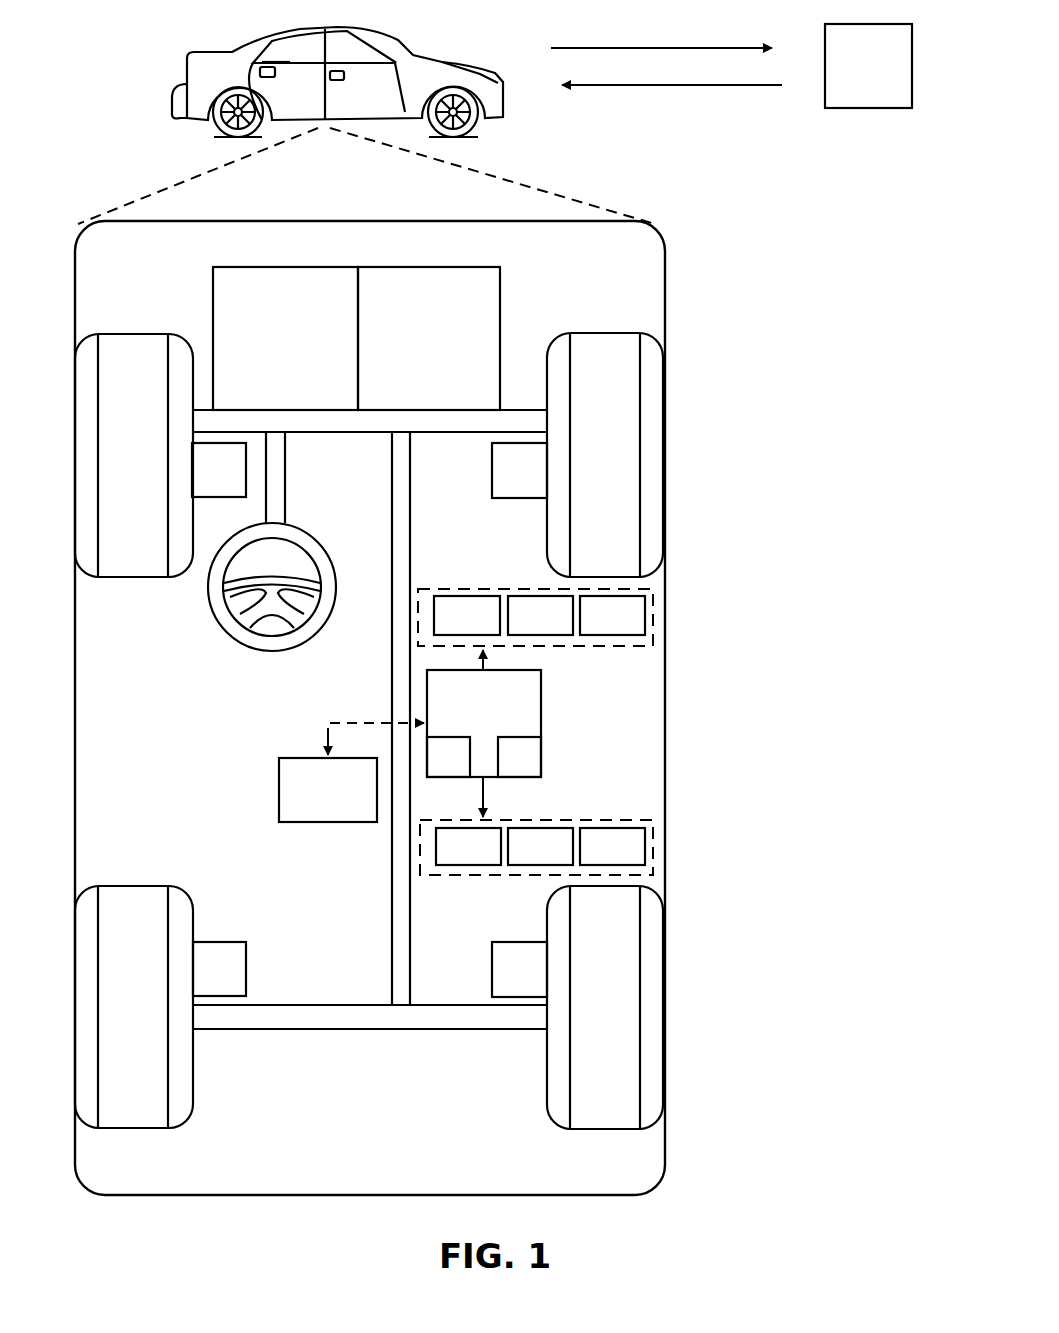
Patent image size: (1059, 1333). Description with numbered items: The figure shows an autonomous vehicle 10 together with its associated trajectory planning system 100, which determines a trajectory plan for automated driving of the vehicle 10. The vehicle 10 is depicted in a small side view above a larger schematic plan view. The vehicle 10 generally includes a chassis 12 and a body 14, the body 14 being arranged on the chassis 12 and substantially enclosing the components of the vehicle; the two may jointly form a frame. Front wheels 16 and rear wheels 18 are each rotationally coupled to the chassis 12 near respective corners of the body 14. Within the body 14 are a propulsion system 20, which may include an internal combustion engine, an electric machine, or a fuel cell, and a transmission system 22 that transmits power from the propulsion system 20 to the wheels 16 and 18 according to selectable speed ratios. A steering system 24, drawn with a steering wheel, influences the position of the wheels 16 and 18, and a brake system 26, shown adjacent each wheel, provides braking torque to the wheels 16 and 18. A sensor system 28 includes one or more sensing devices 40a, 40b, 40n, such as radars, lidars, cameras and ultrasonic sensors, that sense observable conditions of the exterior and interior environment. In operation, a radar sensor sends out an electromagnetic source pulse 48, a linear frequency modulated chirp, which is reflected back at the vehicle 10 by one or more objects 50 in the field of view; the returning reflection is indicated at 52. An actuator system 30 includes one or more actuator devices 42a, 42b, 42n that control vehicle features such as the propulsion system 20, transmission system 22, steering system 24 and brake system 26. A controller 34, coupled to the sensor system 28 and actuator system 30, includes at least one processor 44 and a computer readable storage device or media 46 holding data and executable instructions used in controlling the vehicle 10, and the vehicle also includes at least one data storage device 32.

The vehicle 10 is at (172, 100).
The chassis 12 is at (392, 908).
The body 14 is at (75, 684).
The front wheels 16 is at (135, 334).
The rear wheels 18 is at (133, 1130).
The propulsion system 20 is at (270, 353).
The transmission system 22 is at (414, 353).
The steering system 24 is at (303, 486).
The brake system 26 is at (203, 485).
The sensor system 28 is at (487, 589).
The actuator system 30 is at (483, 877).
The data storage device 32 is at (312, 804).
The controller 34 is at (468, 733).
The sensing device 40a is at (446, 631).
The sensing device 40b is at (519, 631).
The sensing device 40n is at (591, 631).
The actuator device 42a is at (447, 862).
The actuator device 42b is at (519, 862).
The actuator device 42n is at (591, 862).
The processor 44 is at (434, 772).
The computer readable storage device or media 46 is at (506, 772).
The electromagnetic source pulse 48 is at (668, 48).
The object 50 is at (868, 24).
The received signal 52 is at (730, 86).
The trajectory planning system 100 is at (696, 205).